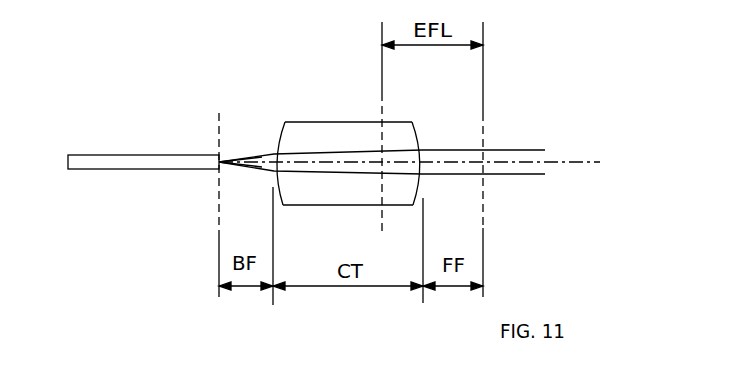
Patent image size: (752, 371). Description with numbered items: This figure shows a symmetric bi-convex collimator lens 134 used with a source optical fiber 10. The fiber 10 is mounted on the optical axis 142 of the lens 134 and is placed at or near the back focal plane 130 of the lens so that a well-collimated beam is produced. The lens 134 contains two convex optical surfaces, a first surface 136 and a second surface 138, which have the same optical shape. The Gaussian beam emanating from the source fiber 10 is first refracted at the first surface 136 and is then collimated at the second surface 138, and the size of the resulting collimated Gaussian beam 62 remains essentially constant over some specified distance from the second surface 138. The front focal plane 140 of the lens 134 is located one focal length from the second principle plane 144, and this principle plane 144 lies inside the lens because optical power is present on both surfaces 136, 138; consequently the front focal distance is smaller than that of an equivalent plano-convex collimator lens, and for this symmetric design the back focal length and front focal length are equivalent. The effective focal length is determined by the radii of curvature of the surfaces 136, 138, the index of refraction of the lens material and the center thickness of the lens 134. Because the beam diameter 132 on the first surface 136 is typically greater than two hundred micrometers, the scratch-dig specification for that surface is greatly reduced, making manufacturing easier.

The source optical fiber 10 is at (105, 152).
The collimated Gaussian beam 62 is at (510, 175).
The back focal plane 130 is at (213, 128).
The beam diameter 132 is at (262, 168).
The lens 134 is at (316, 122).
The first surface 136 is at (278, 138).
The second surface 138 is at (420, 127).
The front focal plane 140 is at (483, 212).
The optical axis 142 is at (572, 160).
The second principle plane 144 is at (380, 215).